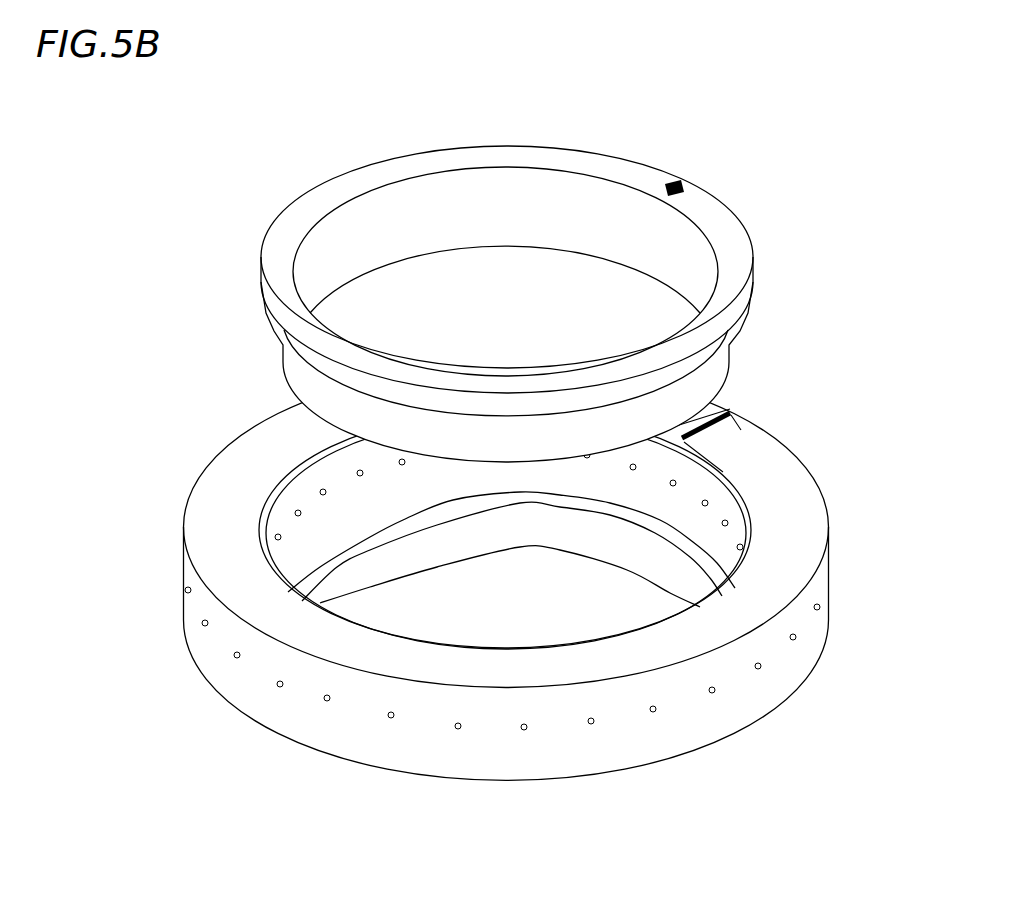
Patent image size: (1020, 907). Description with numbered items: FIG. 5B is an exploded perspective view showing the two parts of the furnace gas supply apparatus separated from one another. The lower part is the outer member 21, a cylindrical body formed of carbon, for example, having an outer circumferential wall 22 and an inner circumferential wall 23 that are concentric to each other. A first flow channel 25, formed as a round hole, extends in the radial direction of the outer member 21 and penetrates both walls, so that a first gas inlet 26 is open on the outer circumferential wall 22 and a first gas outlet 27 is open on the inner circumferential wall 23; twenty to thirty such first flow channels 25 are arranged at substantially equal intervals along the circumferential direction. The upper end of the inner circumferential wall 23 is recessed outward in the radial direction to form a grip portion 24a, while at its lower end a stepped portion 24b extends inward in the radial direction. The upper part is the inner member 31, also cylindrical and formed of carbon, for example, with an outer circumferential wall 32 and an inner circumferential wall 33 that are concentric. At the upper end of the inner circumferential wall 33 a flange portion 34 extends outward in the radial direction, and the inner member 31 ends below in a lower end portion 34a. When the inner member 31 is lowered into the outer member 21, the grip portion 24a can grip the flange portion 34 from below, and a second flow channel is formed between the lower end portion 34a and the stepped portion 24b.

The outer member 21 is at (812, 455).
The outer circumferential wall 22 is at (245, 690).
The inner circumferential wall 23 is at (694, 492).
The grip portion 24a is at (272, 514).
The stepped portion 24b is at (318, 575).
The first flow channel 25 is at (658, 714).
The first gas inlet 26 is at (592, 724).
The first gas outlet 27 is at (322, 488).
The inner member 31 is at (511, 273).
The outer circumferential wall 32 is at (735, 344).
The inner circumferential wall 33 is at (598, 212).
The flange portion 34 is at (755, 253).
The lower end portion 34a is at (323, 418).